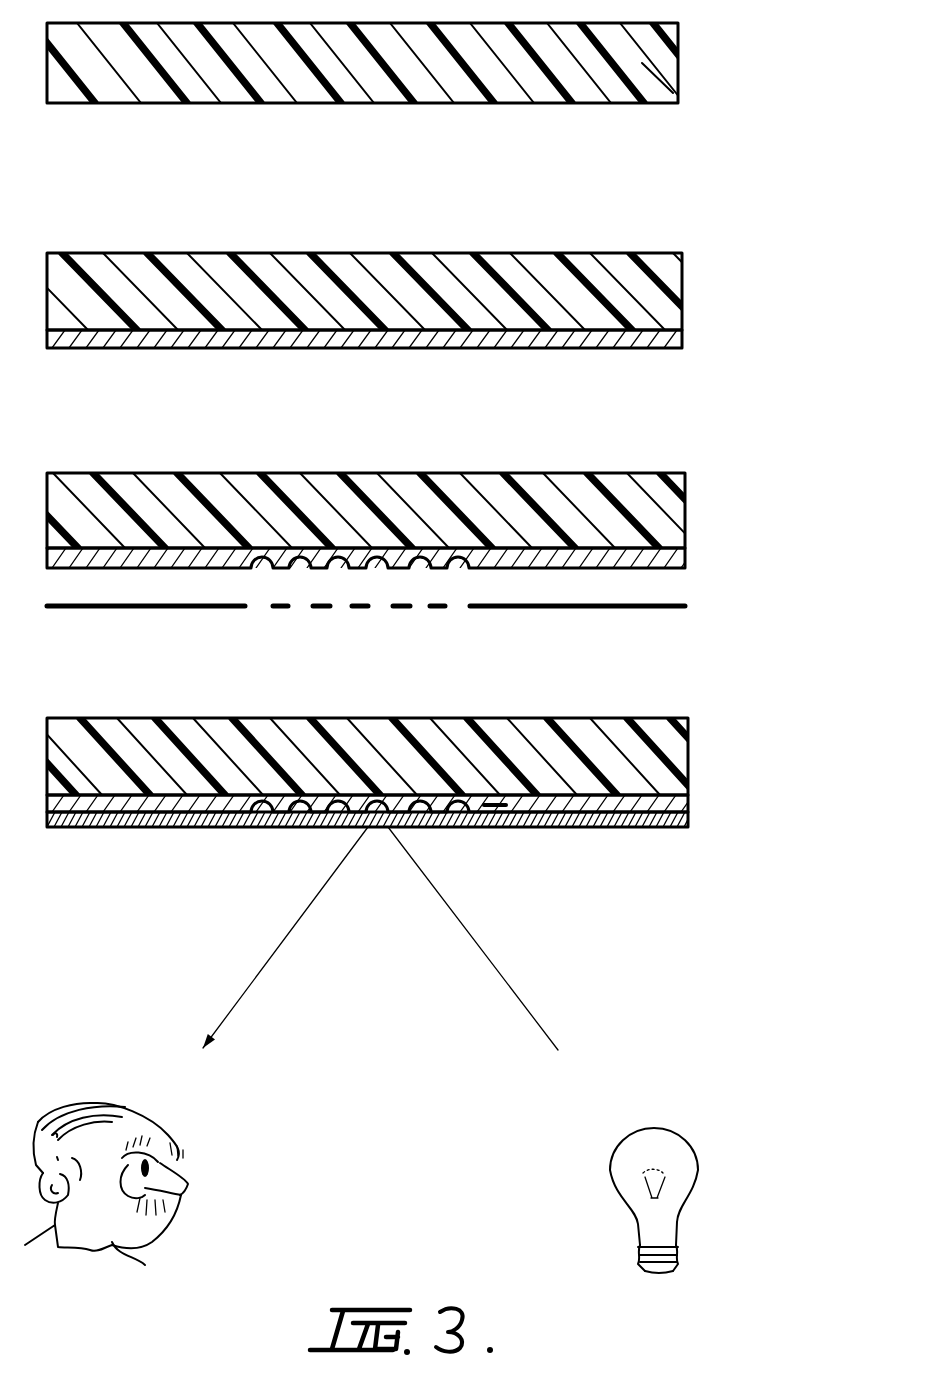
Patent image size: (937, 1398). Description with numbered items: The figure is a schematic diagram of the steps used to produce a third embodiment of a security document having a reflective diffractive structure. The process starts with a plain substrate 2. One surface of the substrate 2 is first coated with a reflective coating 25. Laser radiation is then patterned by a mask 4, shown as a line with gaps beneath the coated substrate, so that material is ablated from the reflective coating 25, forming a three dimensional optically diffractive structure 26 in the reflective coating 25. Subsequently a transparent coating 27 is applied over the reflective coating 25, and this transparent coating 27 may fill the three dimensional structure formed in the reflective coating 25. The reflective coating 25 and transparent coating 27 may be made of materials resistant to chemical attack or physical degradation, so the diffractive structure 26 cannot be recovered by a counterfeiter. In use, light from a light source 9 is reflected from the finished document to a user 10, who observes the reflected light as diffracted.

The substrate 2 is at (678, 103).
The reflective coating 25 is at (655, 340).
The mask 4 is at (658, 617).
The three dimensional optically diffractive structure 26 is at (512, 812).
The transparent coating 27 is at (675, 830).
The user 10 is at (190, 1185).
The light source 9 is at (617, 1168).